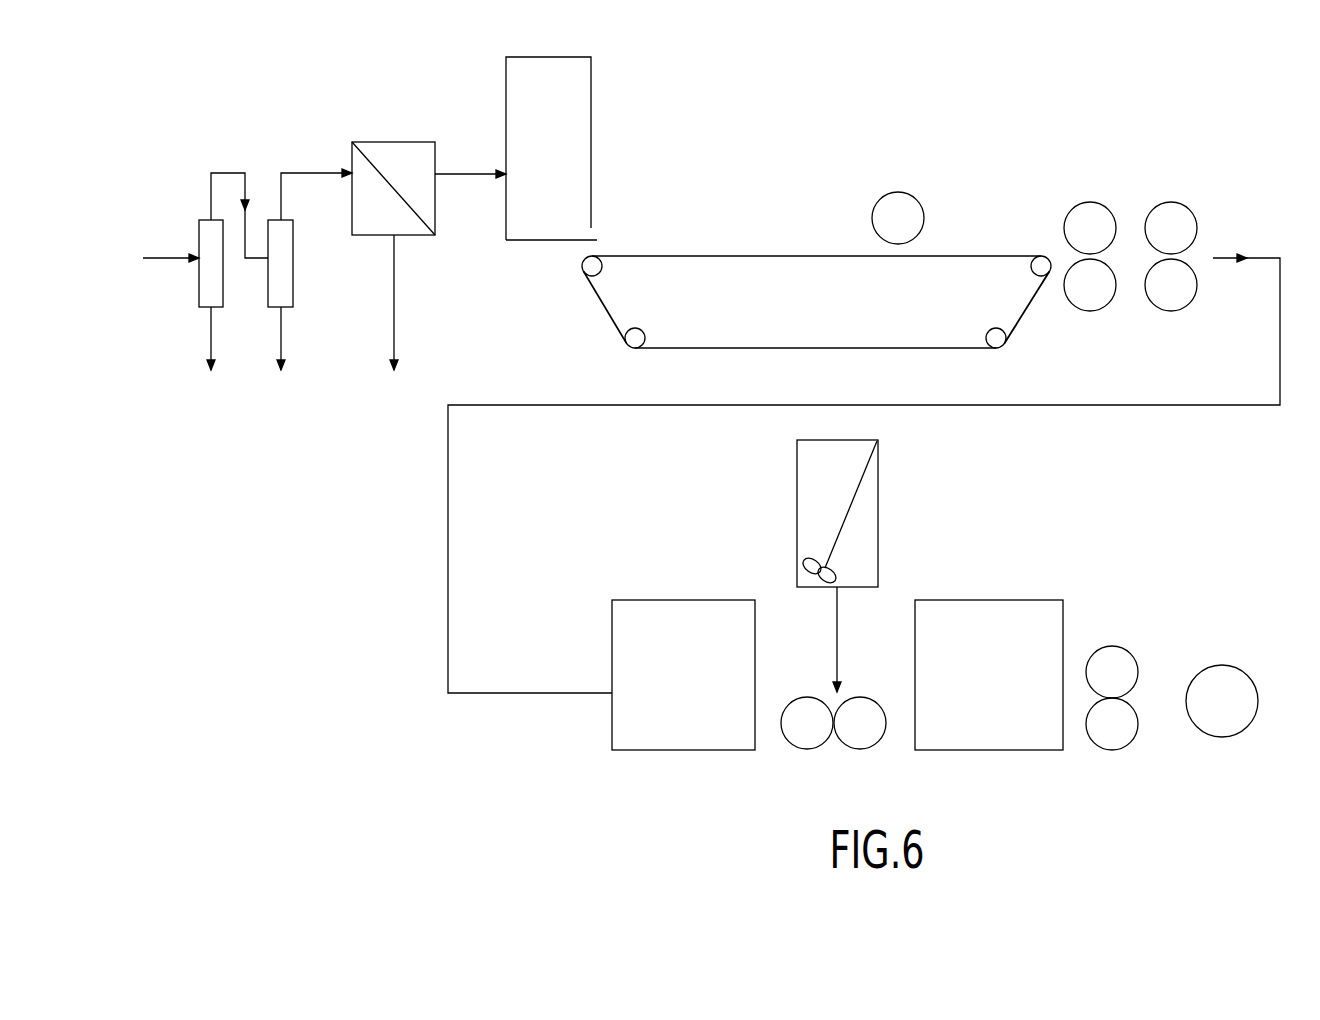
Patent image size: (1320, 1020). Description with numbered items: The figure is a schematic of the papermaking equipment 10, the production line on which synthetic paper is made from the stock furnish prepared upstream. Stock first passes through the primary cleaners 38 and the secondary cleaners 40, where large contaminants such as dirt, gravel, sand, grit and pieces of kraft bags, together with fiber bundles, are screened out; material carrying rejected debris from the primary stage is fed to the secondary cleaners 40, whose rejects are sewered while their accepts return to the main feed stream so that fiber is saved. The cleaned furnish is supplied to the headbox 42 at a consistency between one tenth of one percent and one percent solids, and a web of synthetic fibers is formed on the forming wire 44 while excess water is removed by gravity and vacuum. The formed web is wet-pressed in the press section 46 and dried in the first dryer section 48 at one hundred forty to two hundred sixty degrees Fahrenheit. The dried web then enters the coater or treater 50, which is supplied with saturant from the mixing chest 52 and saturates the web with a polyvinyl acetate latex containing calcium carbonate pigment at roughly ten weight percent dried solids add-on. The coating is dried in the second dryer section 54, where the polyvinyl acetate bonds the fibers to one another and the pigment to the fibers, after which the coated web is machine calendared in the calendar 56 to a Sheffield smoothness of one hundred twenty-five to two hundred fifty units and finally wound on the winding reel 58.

The papermaking equipment 10 is at (266, 100).
The primary cleaners 38 is at (199, 236).
The secondary cleaners 40 is at (395, 142).
The headbox 42 is at (593, 134).
The forming wire 44 is at (890, 193).
The press section 46 is at (1130, 176).
The first dryer section 48 is at (612, 631).
The coater or treater 50 is at (831, 764).
The mixing chest 52 is at (796, 492).
The second dryer section 54 is at (986, 600).
The calendar 56 is at (1137, 626).
The winding reel 58 is at (1208, 737).